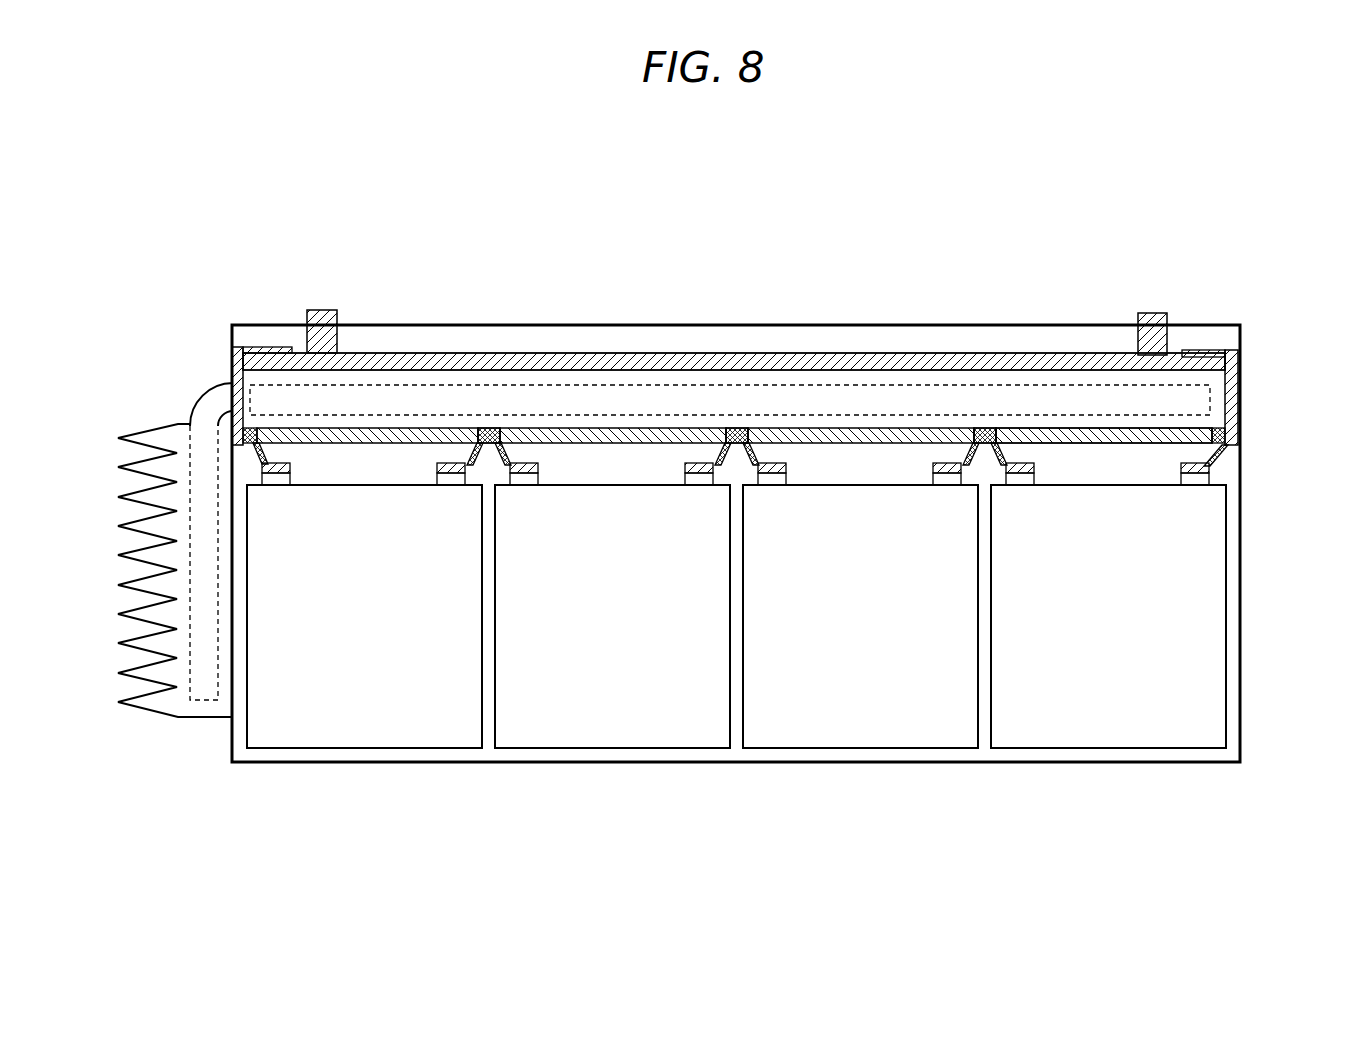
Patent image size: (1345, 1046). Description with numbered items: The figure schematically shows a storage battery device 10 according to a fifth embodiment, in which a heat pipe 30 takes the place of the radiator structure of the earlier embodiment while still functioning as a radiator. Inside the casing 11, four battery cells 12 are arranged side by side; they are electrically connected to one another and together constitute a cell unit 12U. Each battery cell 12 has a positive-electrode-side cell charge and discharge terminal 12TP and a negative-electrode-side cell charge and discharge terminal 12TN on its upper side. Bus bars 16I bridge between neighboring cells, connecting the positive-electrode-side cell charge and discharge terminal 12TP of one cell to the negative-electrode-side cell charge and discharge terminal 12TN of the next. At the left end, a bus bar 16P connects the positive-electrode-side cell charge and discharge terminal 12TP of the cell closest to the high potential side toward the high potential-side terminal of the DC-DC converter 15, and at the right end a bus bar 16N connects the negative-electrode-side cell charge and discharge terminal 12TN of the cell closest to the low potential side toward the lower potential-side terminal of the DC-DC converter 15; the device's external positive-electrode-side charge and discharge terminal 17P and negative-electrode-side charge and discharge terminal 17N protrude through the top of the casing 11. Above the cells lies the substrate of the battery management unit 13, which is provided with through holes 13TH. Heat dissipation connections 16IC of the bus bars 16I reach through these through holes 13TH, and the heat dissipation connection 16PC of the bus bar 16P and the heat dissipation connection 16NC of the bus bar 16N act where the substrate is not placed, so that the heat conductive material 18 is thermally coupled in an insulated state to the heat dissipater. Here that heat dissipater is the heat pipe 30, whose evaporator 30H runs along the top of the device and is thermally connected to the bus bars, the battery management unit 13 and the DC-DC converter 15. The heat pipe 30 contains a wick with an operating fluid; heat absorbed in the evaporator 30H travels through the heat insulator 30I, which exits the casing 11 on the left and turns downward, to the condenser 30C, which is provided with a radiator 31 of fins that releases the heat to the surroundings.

The storage battery device 10 is at (741, 182).
The casing 11 is at (676, 325).
The battery cell 12 is at (366, 725).
The cell unit 12U is at (739, 812).
The positive-electrode-side cell charge and discharge terminal 12TP is at (293, 474).
The negative-electrode-side cell charge and discharge terminal 12TN is at (437, 473).
The battery management unit 13 is at (1137, 445).
The through hole 13TH is at (479, 428).
The DC-DC converter 15 is at (872, 355).
The bus bar 16P is at (243, 430).
The heat dissipation connection 16PC is at (255, 432).
The bus bar 16I is at (512, 452).
The heat dissipation connection 16IC is at (493, 440).
The bus bar 16N is at (1220, 352).
The heat dissipation connection 16NC is at (1235, 445).
The positive-electrode-side charge and discharge terminal 17P is at (328, 312).
The negative-electrode-side charge and discharge terminal 17N is at (1150, 315).
The heat conductive material 18 is at (262, 428).
The heat pipe 30 is at (404, 355).
The condenser 30C is at (149, 407).
The evaporator 30H is at (606, 360).
The heat insulator 30I is at (210, 384).
The radiator 31 is at (135, 520).